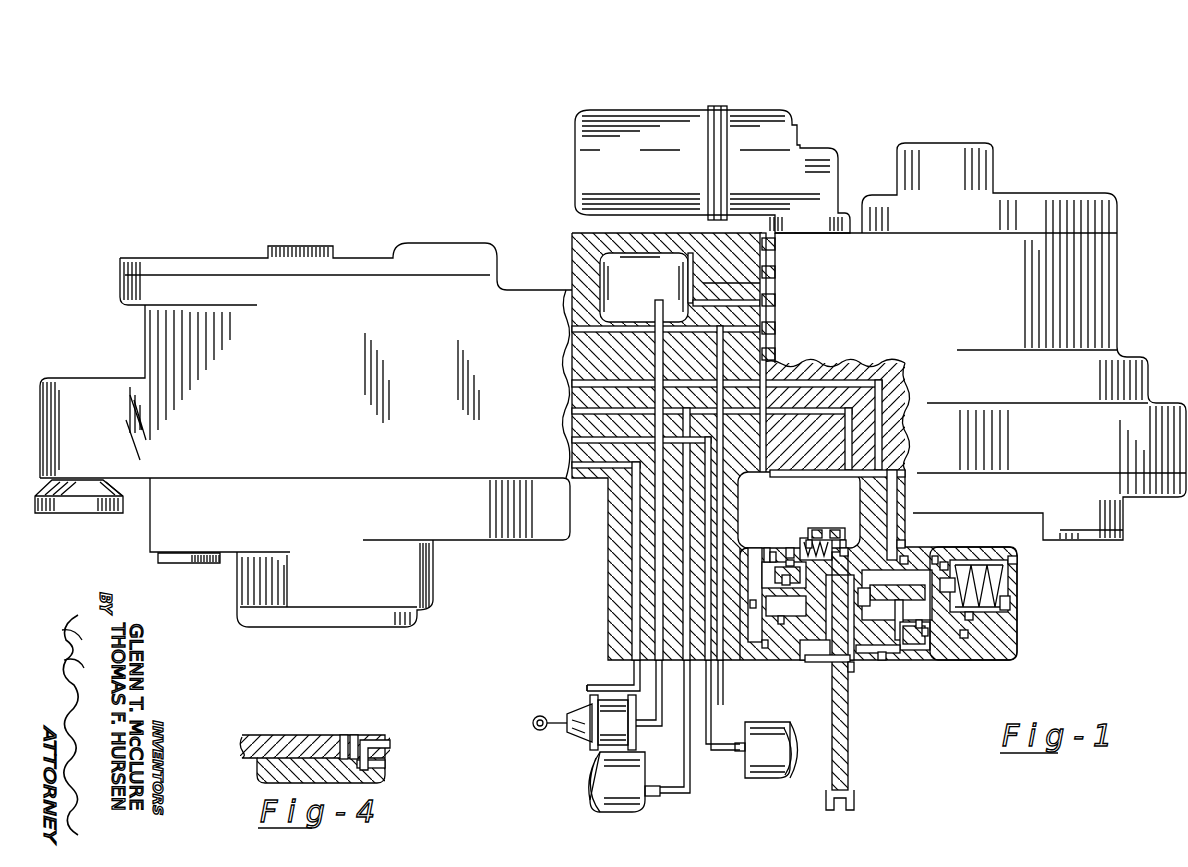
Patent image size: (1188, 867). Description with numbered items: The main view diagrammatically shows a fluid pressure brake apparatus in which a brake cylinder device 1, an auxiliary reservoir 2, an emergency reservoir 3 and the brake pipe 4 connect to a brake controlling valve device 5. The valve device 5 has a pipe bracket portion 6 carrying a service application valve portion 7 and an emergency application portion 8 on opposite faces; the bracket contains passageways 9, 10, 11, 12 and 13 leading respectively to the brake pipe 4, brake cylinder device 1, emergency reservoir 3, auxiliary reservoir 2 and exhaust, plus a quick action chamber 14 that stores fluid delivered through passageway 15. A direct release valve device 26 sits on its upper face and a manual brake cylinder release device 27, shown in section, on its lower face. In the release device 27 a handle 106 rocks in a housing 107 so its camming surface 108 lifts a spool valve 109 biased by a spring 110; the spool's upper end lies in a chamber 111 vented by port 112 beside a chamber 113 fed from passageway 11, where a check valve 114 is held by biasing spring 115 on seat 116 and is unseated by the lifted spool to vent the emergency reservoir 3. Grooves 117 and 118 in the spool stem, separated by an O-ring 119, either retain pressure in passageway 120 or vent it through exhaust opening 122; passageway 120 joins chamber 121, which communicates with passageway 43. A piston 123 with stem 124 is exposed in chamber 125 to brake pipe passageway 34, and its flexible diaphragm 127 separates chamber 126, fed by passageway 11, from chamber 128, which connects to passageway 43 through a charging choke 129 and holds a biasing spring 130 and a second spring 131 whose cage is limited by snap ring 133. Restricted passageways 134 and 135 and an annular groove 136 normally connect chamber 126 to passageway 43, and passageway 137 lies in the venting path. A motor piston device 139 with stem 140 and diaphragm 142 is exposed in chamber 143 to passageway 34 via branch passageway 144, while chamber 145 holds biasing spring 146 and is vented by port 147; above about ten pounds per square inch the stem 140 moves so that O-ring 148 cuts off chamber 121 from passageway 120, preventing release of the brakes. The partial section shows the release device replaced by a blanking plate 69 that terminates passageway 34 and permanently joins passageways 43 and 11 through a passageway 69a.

In FIG. 1, the brake cylinder device 1 is at (576, 710).
In FIG. 1, the auxiliary reservoir 2 is at (748, 779).
In FIG. 1, the emergency reservoir 3 is at (645, 764).
In FIG. 1, the brake pipe 4 is at (590, 688).
In FIG. 1, the brake controlling valve device 5 is at (1000, 158).
In FIG. 1, the pipe bracket portion 6 is at (768, 509).
In FIG. 1, the service application valve portion 7 is at (1122, 264).
In FIG. 1, the emergency application portion 8 is at (205, 256).
In FIG. 1, the passageway 9 is at (572, 466).
In FIG. 1, the passageway 10 is at (656, 664).
In FIG. 1, the passageway 11 is at (572, 411).
In FIG. 4, the passageway 11 is at (358, 736).
In FIG. 1, the passageway 12 is at (572, 441).
In FIG. 1, the passageway 13 is at (724, 672).
In FIG. 1, the quick action chamber 14 is at (631, 297).
In FIG. 1, the passageway 15 is at (572, 330).
In FIG. 1, the direct release valve device 26 is at (575, 125).
In FIG. 1, the manual brake cylinder release device 27 is at (1001, 593).
In FIG. 1, the brake pipe passageway 34 is at (572, 384).
In FIG. 4, the brake pipe passageway 34 is at (342, 735).
In FIG. 1, the passageway 43 is at (906, 472).
In FIG. 4, the passageway 43 is at (392, 744).
In FIG. 4, the blanking plate 69 is at (322, 759).
In FIG. 4, the passageway 69a is at (385, 771).
In FIG. 1, the handle 106 is at (848, 748).
In FIG. 1, the housing 107 is at (829, 666).
In FIG. 1, the camming surface 108 is at (833, 700).
In FIG. 1, the spool valve 109 is at (872, 652).
In FIG. 1, the spring 110 is at (882, 660).
In FIG. 1, the chamber 111 is at (836, 557).
In FIG. 1, the port 112 is at (790, 548).
In FIG. 1, the chamber 113 is at (817, 528).
In FIG. 1, the check valve 114 is at (808, 530).
In FIG. 1, the biasing spring 115 is at (842, 540).
In FIG. 1, the seat 116 is at (842, 548).
In FIG. 1, the annular groove 117 is at (865, 600).
In FIG. 1, the annular groove 118 is at (818, 652).
In FIG. 1, the O-ring 119 is at (883, 621).
In FIG. 1, the passageway 120 is at (786, 614).
In FIG. 1, the chamber 121 is at (784, 587).
In FIG. 1, the exhaust opening 122 is at (852, 672).
In FIG. 1, the piston 123 is at (995, 565).
In FIG. 1, the stem 124 is at (958, 564).
In FIG. 1, the chamber 125 is at (897, 596).
In FIG. 1, the chamber 126 is at (936, 560).
In FIG. 1, the annular flexible diaphragm 127 is at (944, 565).
In FIG. 1, the chamber 128 is at (965, 637).
In FIG. 1, the charging choke 129 is at (921, 627).
In FIG. 1, the biasing spring 130 is at (1010, 601).
In FIG. 1, the second biasing spring 131 is at (1012, 560).
In FIG. 1, the snap ring 133 is at (970, 618).
In FIG. 1, the restricted passageway 134 is at (901, 540).
In FIG. 1, the restricted passageway 135 is at (905, 560).
In FIG. 1, the annular groove 136 is at (926, 635).
In FIG. 1, the passageway 137 is at (896, 642).
In FIG. 1, the motor piston device 139 is at (755, 548).
In FIG. 1, the stem 140 is at (790, 560).
In FIG. 1, the diaphragm 142 is at (772, 550).
In FIG. 1, the chamber 143 is at (754, 608).
In FIG. 1, the branch passageway 144 is at (762, 476).
In FIG. 1, the chamber 145 is at (781, 622).
In FIG. 1, the biasing spring 146 is at (767, 548).
In FIG. 1, the port 147 is at (766, 648).
In FIG. 1, the O-ring 148 is at (786, 575).